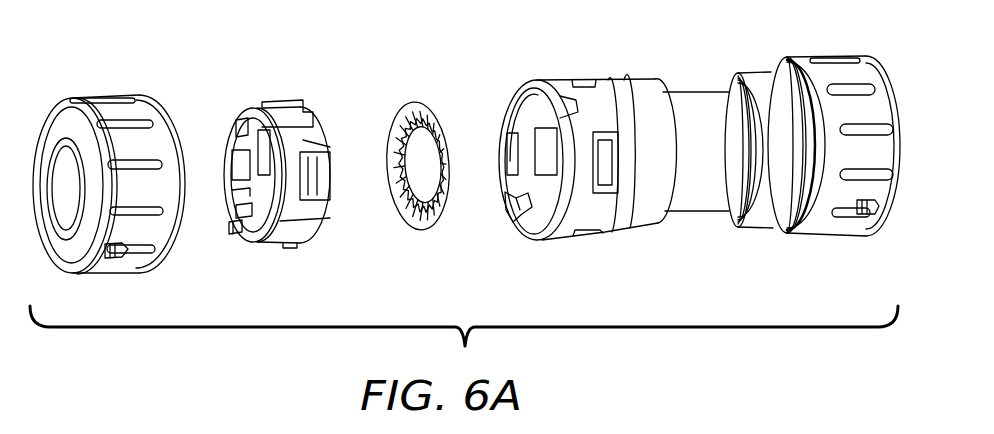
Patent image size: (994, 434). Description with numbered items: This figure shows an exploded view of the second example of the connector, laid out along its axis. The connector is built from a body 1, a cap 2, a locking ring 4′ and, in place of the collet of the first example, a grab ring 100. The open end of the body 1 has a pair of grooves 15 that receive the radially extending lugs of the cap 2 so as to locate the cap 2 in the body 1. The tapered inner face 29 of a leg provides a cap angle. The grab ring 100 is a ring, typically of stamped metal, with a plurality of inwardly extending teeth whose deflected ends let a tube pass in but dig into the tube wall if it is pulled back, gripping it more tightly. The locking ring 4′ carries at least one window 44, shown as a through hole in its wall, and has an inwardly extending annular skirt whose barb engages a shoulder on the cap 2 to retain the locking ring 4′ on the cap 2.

The body 1 is at (651, 50).
The cap 2 is at (292, 76).
The locking ring 4′ is at (141, 72).
The grooves 15 is at (512, 207).
The inner face 29 is at (231, 233).
The window 44 is at (120, 258).
The grab ring 100 is at (412, 101).